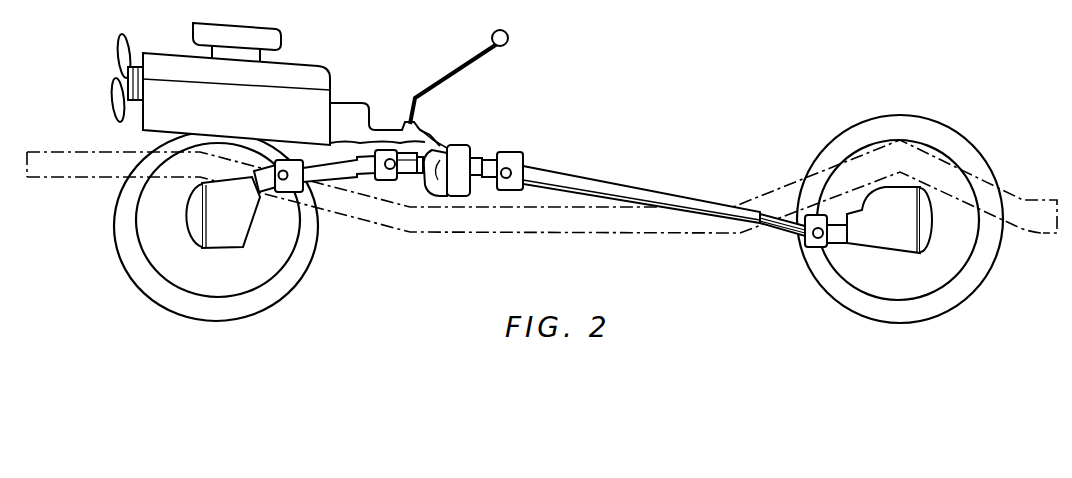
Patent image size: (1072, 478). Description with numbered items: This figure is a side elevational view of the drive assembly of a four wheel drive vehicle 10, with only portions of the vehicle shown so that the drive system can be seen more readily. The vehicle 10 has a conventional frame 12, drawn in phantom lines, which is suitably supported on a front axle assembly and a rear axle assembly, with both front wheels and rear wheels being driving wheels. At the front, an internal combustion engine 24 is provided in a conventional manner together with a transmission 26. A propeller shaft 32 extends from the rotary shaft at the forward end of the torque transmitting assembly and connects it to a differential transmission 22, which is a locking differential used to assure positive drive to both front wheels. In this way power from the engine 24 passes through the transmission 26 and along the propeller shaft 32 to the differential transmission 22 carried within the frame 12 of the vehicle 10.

The vehicle 10 is at (756, 105).
The frame 12 is at (635, 233).
The differential transmission 22 is at (225, 228).
The internal combustion engine 24 is at (322, 66).
The transmission 26 is at (440, 150).
The propeller shaft 32 is at (343, 183).